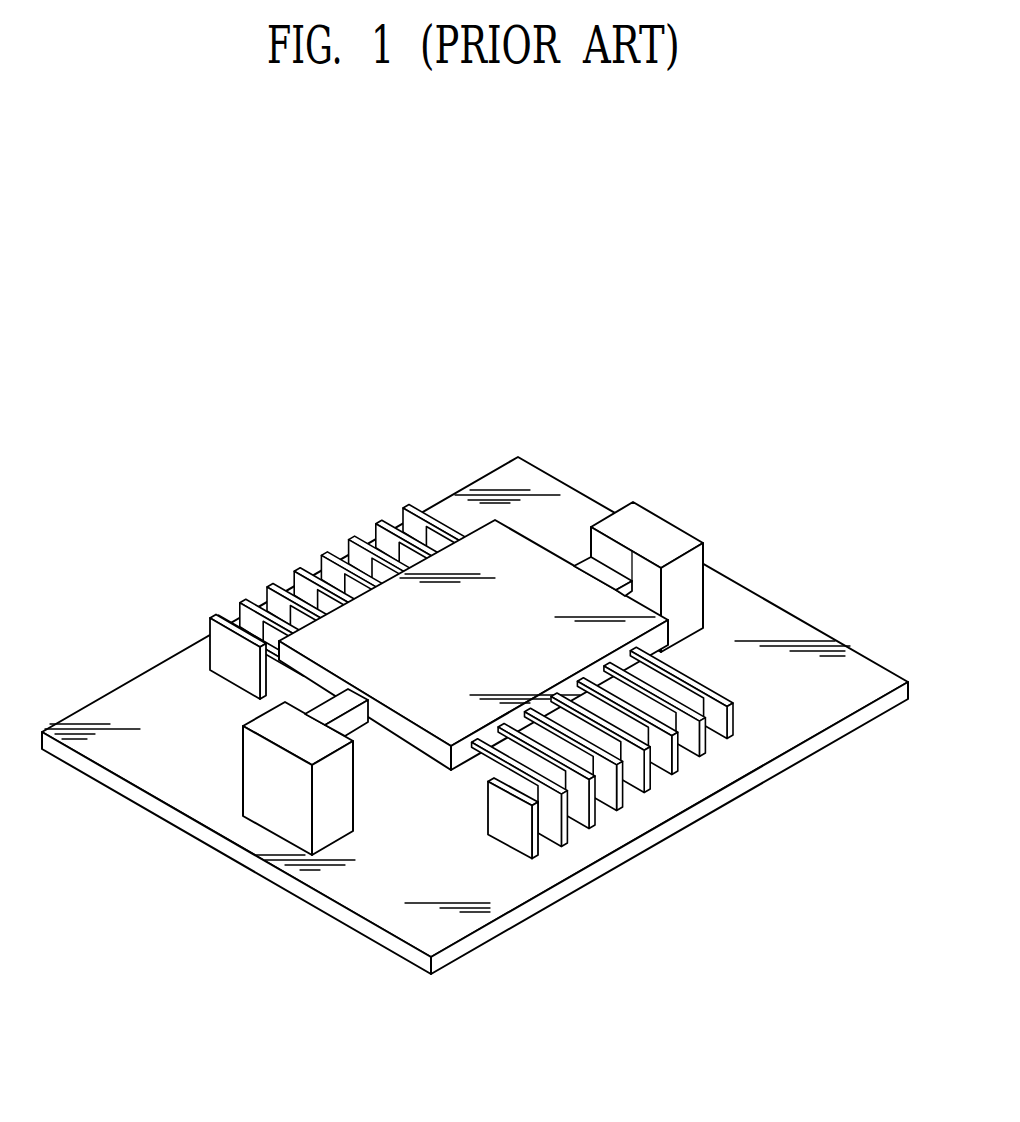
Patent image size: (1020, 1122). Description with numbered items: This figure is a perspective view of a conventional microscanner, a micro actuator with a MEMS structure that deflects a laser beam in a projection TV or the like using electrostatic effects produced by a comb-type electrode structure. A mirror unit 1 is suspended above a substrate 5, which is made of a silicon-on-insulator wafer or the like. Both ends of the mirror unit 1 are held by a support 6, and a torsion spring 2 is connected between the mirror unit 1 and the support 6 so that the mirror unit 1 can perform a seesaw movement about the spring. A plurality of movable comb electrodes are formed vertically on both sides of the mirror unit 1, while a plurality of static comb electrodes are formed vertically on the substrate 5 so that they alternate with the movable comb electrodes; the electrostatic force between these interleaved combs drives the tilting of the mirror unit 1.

The mirror unit 1 is at (528, 558).
The torsion spring 2 is at (612, 552).
The substrate 5 is at (706, 806).
The support 6 is at (680, 532).